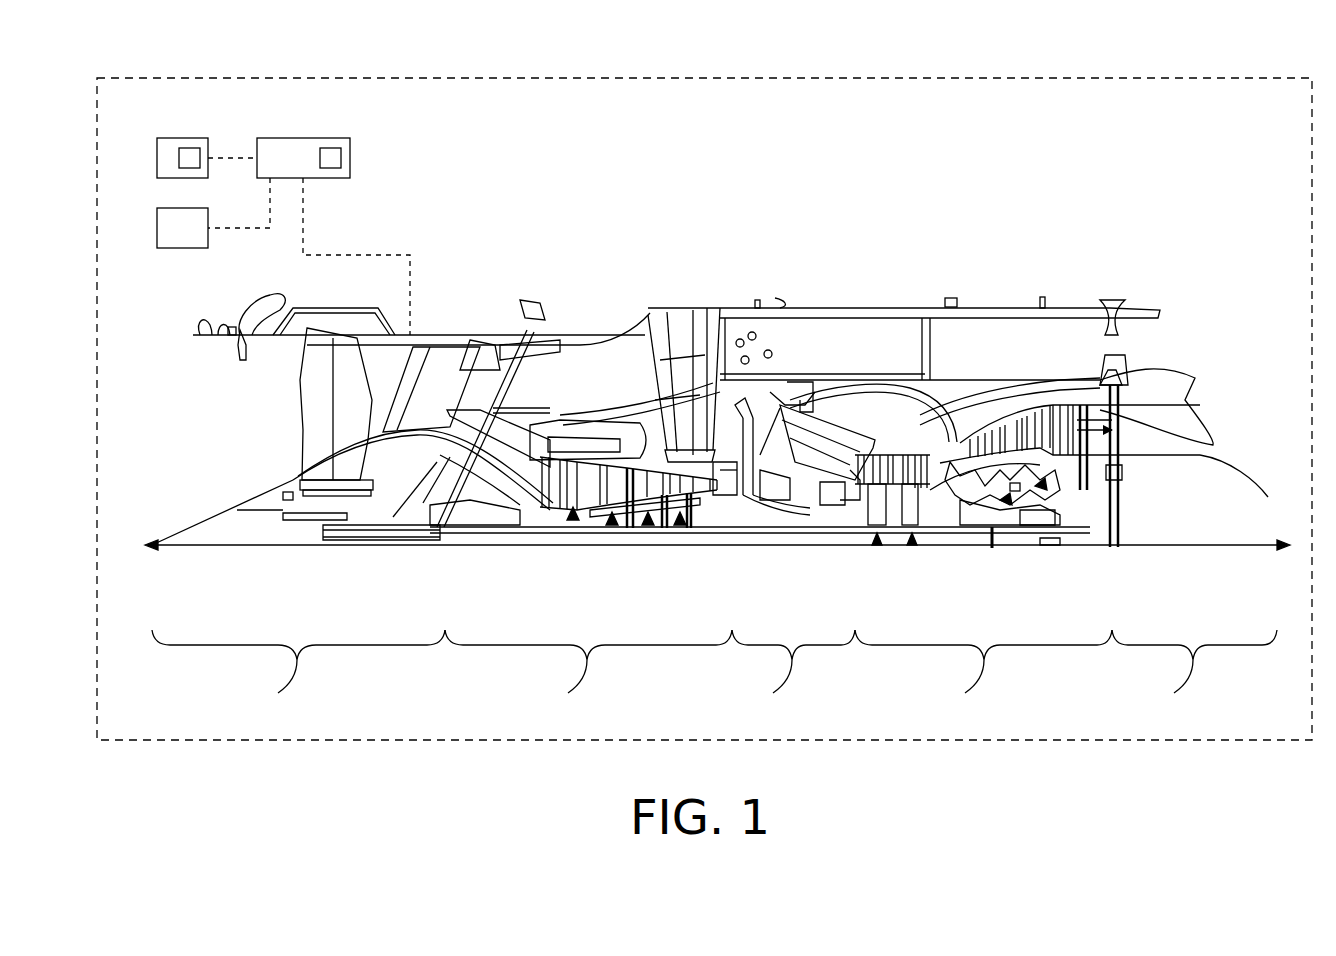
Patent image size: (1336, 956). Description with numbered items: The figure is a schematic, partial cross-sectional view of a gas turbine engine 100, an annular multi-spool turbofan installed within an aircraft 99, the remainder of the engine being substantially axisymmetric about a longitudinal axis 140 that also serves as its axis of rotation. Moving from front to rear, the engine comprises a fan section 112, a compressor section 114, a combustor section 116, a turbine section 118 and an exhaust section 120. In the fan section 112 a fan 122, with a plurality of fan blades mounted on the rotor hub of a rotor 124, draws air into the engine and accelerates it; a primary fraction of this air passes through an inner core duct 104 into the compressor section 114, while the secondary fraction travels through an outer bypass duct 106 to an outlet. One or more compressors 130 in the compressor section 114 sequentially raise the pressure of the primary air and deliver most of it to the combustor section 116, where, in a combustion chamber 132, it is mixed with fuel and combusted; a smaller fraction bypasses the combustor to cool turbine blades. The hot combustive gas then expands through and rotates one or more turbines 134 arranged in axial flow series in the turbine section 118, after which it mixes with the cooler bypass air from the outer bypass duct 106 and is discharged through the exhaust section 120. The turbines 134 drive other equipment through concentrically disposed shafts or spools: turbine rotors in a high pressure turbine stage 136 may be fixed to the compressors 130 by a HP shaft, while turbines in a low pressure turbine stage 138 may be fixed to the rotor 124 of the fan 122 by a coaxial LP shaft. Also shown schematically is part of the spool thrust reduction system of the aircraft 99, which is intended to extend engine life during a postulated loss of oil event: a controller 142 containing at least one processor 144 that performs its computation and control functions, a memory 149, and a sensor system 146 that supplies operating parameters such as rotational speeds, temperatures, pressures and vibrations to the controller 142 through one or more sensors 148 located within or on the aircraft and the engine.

The aircraft 99 is at (170, 78).
The gas turbine engine 100 is at (1083, 170).
The inner core duct 104 is at (497, 520).
The outer bypass duct 106 is at (1065, 306).
The fan section 112 is at (298, 680).
The compressor section 114 is at (588, 680).
The combustor section 116 is at (793, 680).
The turbine section 118 is at (983, 680).
The exhaust section 120 is at (1194, 680).
The fan 122 is at (250, 430).
The rotor 124 is at (307, 500).
The compressors 130 is at (681, 530).
The combustion chamber 132 is at (820, 462).
The turbines 134 is at (877, 546).
The high pressure turbine stage 136 is at (895, 428).
The low pressure turbine stage 138 is at (993, 392).
The longitudinal axis 140 is at (1187, 545).
The controller 142 is at (323, 138).
The processor 144 is at (341, 158).
The sensor system 146 is at (182, 138).
The sensors 148 is at (179, 158).
The memory 149 is at (157, 228).